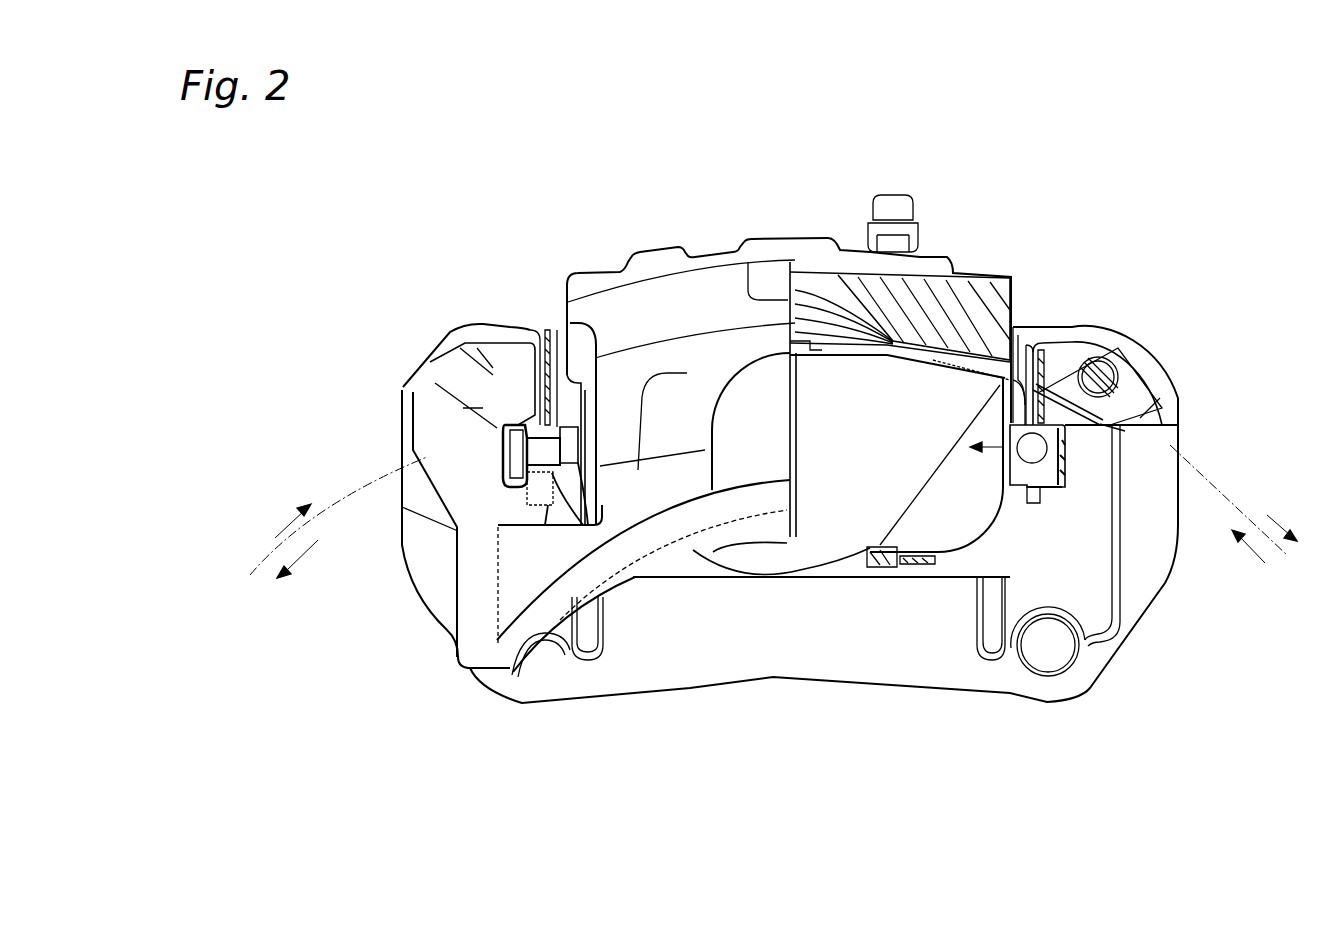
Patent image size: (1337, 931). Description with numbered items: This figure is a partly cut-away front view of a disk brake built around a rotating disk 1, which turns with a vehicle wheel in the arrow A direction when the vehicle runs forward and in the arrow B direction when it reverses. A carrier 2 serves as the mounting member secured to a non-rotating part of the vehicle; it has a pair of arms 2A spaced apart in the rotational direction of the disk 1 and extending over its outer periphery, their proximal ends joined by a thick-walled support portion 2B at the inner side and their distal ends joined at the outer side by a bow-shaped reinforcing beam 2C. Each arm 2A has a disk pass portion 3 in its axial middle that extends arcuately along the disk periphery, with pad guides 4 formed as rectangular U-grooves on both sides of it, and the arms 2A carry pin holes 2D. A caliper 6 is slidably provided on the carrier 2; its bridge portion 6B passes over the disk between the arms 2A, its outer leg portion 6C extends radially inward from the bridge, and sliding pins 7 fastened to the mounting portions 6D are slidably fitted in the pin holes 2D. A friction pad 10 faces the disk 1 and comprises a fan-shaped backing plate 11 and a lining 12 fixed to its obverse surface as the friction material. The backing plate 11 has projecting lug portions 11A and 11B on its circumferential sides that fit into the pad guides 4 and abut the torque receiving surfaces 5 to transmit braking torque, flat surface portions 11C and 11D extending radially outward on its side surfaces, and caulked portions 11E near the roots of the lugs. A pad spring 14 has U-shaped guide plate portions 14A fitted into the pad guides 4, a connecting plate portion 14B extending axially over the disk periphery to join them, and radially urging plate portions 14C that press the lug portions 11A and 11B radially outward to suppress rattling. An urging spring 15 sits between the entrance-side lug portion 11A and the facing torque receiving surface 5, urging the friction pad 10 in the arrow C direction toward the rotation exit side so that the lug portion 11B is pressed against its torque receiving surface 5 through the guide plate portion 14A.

The disk 1 is at (1235, 500).
The carrier 2 is at (518, 705).
The arms 2A is at (490, 375).
The support portion 2B is at (779, 630).
The reinforcing beam 2C is at (697, 530).
The pin holes 2D is at (1085, 398).
The disk pass portion 3 is at (1140, 417).
The pad guides 4 is at (512, 478).
The torque receiving surfaces 5 is at (503, 425).
The caliper 6 is at (775, 236).
The bridge portion 6B is at (920, 290).
The outer leg portion 6C is at (685, 440).
The mounting portions 6D is at (530, 340).
The sliding pins 7 is at (1125, 358).
The friction pad 10 is at (910, 568).
The backing plate 11 is at (958, 560).
The lug portion 11A is at (1040, 497).
The lug portion 11B is at (520, 437).
The flat surface portion 11C is at (1021, 380).
The flat surface portion 11D is at (557, 430).
The caulked portions 11E is at (1017, 490).
The lining 12 is at (850, 503).
The pad spring 14 is at (506, 453).
The guide plate portions 14A is at (510, 468).
The connecting plate portion 14B is at (545, 335).
The radially urging plate portions 14C is at (540, 500).
The urging spring 15 is at (1127, 423).